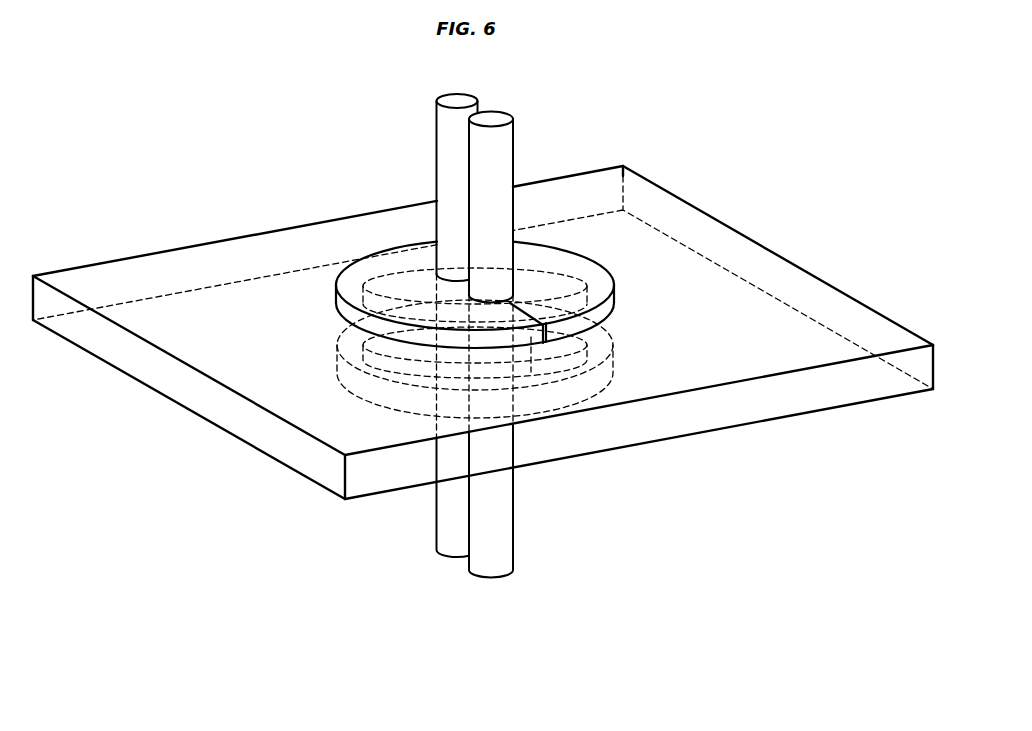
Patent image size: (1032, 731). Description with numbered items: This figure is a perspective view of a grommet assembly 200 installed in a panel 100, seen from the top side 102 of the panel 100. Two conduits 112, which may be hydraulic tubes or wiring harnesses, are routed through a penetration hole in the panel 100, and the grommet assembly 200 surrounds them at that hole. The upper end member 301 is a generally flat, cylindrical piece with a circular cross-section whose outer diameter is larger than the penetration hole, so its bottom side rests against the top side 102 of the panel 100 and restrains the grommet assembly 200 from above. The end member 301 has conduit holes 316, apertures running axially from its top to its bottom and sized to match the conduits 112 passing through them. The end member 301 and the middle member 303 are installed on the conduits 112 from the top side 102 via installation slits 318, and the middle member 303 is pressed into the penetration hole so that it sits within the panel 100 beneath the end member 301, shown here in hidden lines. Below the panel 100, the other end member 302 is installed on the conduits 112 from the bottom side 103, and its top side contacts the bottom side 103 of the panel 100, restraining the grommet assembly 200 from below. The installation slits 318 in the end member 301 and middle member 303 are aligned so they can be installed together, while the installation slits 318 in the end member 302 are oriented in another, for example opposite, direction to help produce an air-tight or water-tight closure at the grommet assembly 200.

The panel 100 is at (688, 200).
The top side of panel 102 is at (258, 256).
The bottom side of panel 103 is at (258, 452).
The conduits 112 is at (447, 131).
The grommet assembly 200 is at (553, 253).
The end member 301 is at (336, 303).
The end member 302 is at (610, 378).
The middle member 303 is at (338, 343).
The conduit holes 316 is at (438, 280).
The installation slits 318 is at (527, 312).